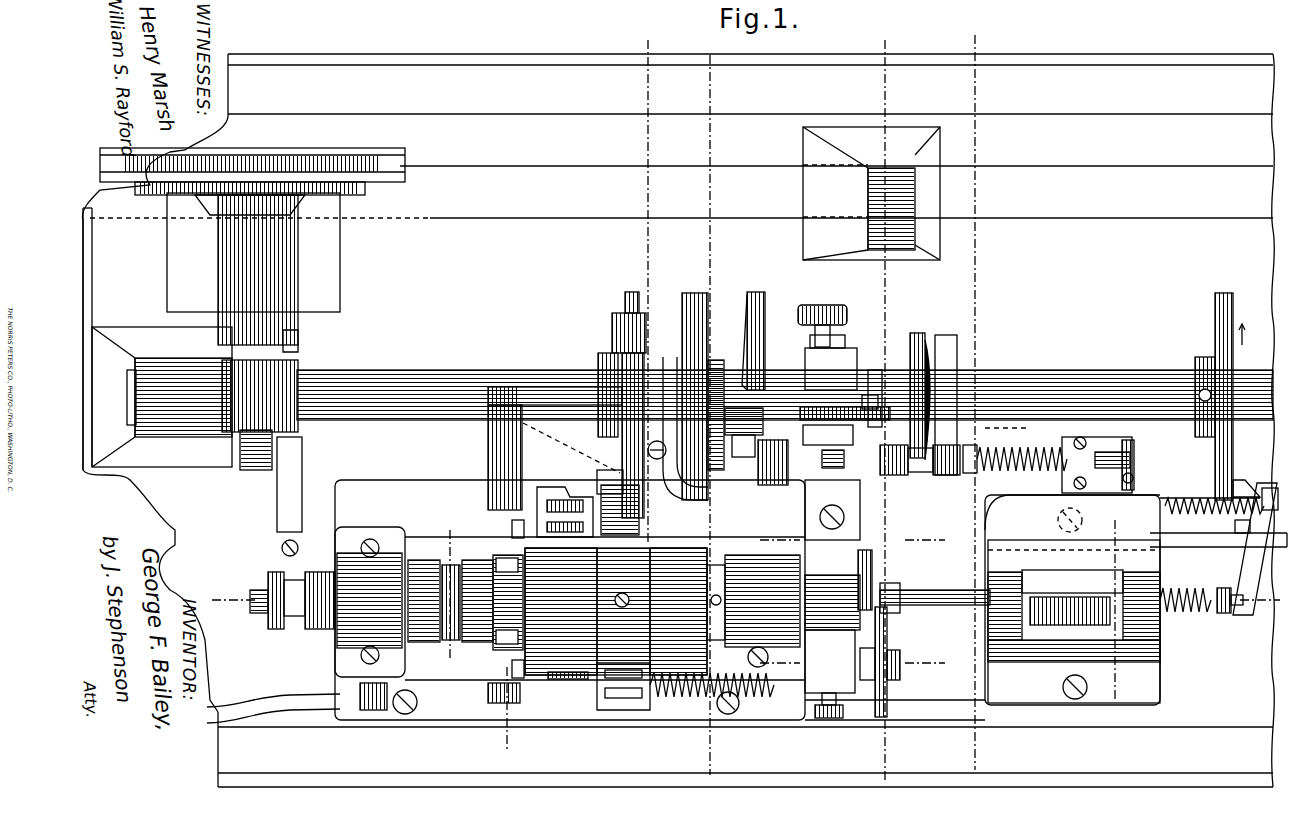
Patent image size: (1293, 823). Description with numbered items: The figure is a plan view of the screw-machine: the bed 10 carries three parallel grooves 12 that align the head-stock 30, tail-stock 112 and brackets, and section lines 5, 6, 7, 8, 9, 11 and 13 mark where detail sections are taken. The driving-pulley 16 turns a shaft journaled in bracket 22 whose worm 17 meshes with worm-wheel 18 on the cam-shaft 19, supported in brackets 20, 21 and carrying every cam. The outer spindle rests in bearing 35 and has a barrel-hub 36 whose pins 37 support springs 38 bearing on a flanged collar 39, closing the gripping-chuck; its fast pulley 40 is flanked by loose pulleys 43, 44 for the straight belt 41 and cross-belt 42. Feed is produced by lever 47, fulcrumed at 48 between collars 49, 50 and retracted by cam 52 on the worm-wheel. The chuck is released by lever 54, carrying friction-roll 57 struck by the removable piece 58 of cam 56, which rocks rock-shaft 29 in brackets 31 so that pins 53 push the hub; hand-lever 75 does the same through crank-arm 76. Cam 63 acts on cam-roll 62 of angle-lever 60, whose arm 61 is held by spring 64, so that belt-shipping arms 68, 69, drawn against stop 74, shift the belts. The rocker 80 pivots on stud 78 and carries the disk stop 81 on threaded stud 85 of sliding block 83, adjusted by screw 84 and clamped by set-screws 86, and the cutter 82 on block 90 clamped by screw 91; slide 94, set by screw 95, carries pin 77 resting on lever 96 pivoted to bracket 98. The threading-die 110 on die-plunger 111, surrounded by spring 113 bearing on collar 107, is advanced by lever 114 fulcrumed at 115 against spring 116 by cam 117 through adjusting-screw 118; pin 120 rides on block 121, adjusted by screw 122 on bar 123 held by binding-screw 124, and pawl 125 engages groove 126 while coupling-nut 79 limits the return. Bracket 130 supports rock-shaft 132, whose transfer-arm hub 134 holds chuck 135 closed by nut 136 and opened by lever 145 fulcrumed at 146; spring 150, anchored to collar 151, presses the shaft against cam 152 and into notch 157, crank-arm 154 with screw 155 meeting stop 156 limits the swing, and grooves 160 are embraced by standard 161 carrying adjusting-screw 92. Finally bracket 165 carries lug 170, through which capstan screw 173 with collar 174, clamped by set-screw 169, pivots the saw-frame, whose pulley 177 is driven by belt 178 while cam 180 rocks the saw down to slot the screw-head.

The section line 5 is at (744, 600).
The section line 6 is at (577, 394).
The section line 7 is at (710, 413).
The section line 8 is at (882, 408).
The section line 9 is at (975, 400).
The bed 10 is at (920, 402).
The section line 11 is at (852, 540).
The longitudinal parallel grooves 12 is at (762, 427).
The section line 13 is at (1114, 601).
The driving-pulley 16 is at (362, 156).
The worm 17 is at (296, 372).
The worm-wheel 18 is at (258, 455).
The cam-shaft 19 is at (452, 372).
The bracket 20 is at (162, 397).
The bracket 21 is at (712, 698).
The bracket 22 is at (253, 269).
The rock-shaft 29 is at (487, 456).
The head-stock 30 is at (585, 603).
The brackets 31 is at (500, 598).
The bearing 35 is at (377, 597).
The barrel-hub 36 is at (477, 601).
The pins 37 is at (452, 640).
The spiral springs 38 is at (470, 645).
The flanged collar 39 is at (424, 601).
The fast pulley 40 is at (616, 611).
The straight belt 41 is at (650, 523).
The cross-belt 42 is at (555, 679).
The loose pulley 43 is at (561, 611).
The loose pulley 44 is at (755, 611).
The lever 47 is at (302, 497).
The fulcrum 48 is at (282, 546).
The collar 49 is at (316, 630).
The collar 50 is at (276, 630).
The cam 52 is at (300, 342).
The round-ended pins 53 is at (500, 565).
The lever 54 is at (560, 388).
The cam 56 is at (626, 312).
The friction-roll 57 is at (571, 448).
The removable cam-piece 58 is at (613, 338).
The angle-lever 60 is at (632, 435).
The upwardly-inclined arm 61 is at (601, 483).
The cam-roll 62 is at (703, 380).
The cam 63 is at (683, 335).
The spring 64 is at (662, 455).
The belt-shipping arm 68 is at (560, 498).
The belt-shipping arm 69 is at (627, 700).
The stop 74 is at (736, 710).
The hand-lever 75 is at (265, 712).
The crank-arm 76 is at (488, 695).
The pin 77 is at (870, 395).
The conical stud 78 is at (900, 614).
The coupling-nut 79 is at (895, 590).
The rocker 80 is at (831, 369).
The disk stop 81 is at (887, 685).
The cutting-tool 82 is at (868, 594).
The sliding block 83 is at (830, 661).
The screw 84 is at (841, 706).
The threaded stud 85 is at (900, 672).
The set-screws 86 is at (900, 655).
The adjustable block 90 is at (832, 518).
The screw 91 is at (812, 535).
The adjusting-screw 92 is at (905, 192).
The slide 94 is at (830, 337).
The screw 95 is at (818, 306).
The lever 96 is at (880, 330).
The bracket 98 is at (871, 193).
The adjustable collar 107 is at (1225, 612).
The threading-die 110 is at (870, 590).
The die-plunger 111 is at (935, 589).
The tail-stock 112 is at (1074, 621).
The spiral spring 113 is at (1200, 613).
The lever 114 is at (1248, 567).
The fulcrum 115 is at (1235, 525).
The spring 116 is at (1200, 502).
The cam 117 is at (1237, 478).
The adjusting-screw 118 is at (1218, 480).
The pin 120 is at (1072, 581).
The horizontal block 121 is at (785, 465).
The screw 122 is at (1172, 634).
The bar 123 is at (1160, 652).
The binding-screw 124 is at (1095, 640).
The pawl 125 is at (830, 470).
The longitudinal groove 126 is at (800, 412).
The bracket 130 is at (1072, 512).
The rock-shaft 132 is at (1105, 452).
The hub 134 is at (892, 476).
The chuck 135 is at (848, 470).
The nut 136 is at (945, 480).
The lever 145 is at (952, 338).
The fulcrum 146 is at (977, 428).
The spring 150 is at (1022, 472).
The collar 151 is at (975, 473).
The cam 152 is at (920, 334).
The crank-arm 154 is at (1134, 455).
The adjusting-screw 155 is at (1134, 475).
The stop 156 is at (1105, 500).
The notch 157 is at (1008, 428).
The grooves 160 is at (935, 480).
The standard 161 is at (912, 428).
The bracket 165 is at (745, 519).
The set-screw 169 is at (752, 445).
The lug 170 is at (735, 470).
The capstan-headed screw 173 is at (748, 378).
The collar 174 is at (725, 470).
The pulley 177 is at (928, 395).
The belt 178 is at (930, 410).
The cam 180 is at (756, 331).